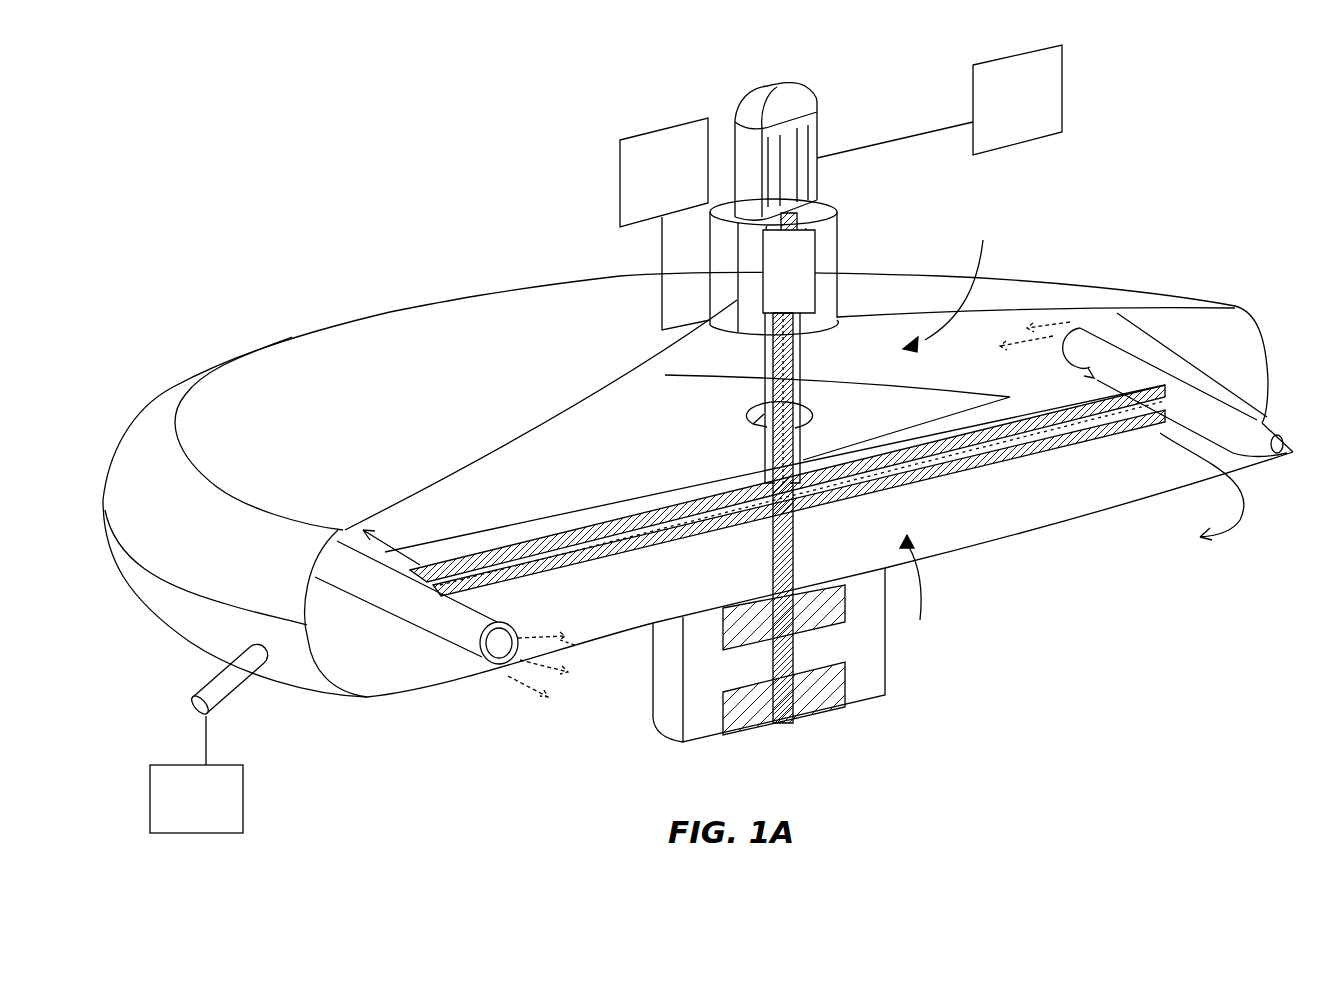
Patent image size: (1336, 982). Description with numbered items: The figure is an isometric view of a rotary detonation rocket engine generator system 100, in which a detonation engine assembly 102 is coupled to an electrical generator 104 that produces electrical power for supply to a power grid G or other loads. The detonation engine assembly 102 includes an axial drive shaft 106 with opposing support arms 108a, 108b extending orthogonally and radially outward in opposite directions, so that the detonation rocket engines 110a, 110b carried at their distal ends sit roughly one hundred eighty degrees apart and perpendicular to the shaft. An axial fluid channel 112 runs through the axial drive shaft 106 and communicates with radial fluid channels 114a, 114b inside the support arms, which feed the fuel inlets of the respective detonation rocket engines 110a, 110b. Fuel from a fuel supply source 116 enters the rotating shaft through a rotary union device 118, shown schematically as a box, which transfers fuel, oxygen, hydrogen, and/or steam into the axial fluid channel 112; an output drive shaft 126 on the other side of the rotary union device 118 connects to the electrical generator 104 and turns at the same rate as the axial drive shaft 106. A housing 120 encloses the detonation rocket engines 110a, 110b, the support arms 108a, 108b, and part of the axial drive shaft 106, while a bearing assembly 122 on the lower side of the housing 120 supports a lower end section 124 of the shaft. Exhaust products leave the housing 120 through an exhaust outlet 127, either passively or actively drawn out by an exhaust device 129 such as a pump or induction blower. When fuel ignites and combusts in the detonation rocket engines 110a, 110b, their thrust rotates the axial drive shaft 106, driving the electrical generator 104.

The rotary detonation rocket engine generator system 100 is at (445, 100).
The detonation engine assembly 102 is at (949, 429).
The electrical generator 104 is at (790, 60).
The axial drive shaft 106 is at (770, 412).
The support arm 108a is at (1100, 405).
The support arm 108b is at (586, 520).
The detonation rocket engine 110a is at (1203, 403).
The detonation rocket engine 110b is at (420, 625).
The axial fluid channel 112 is at (768, 460).
The radial fluid channel 114a is at (1062, 450).
The radial fluid channel 114b is at (642, 545).
The fuel supply source 116 is at (620, 180).
The rotary union device 118 is at (810, 298).
The housing 120 is at (318, 352).
The bearing assembly 122 is at (865, 678).
The lower end section 124 is at (770, 670).
The output drive shaft 126 is at (838, 212).
The exhaust outlet 127 is at (230, 692).
The exhaust device 129 is at (150, 800).
The power grid G is at (1062, 85).